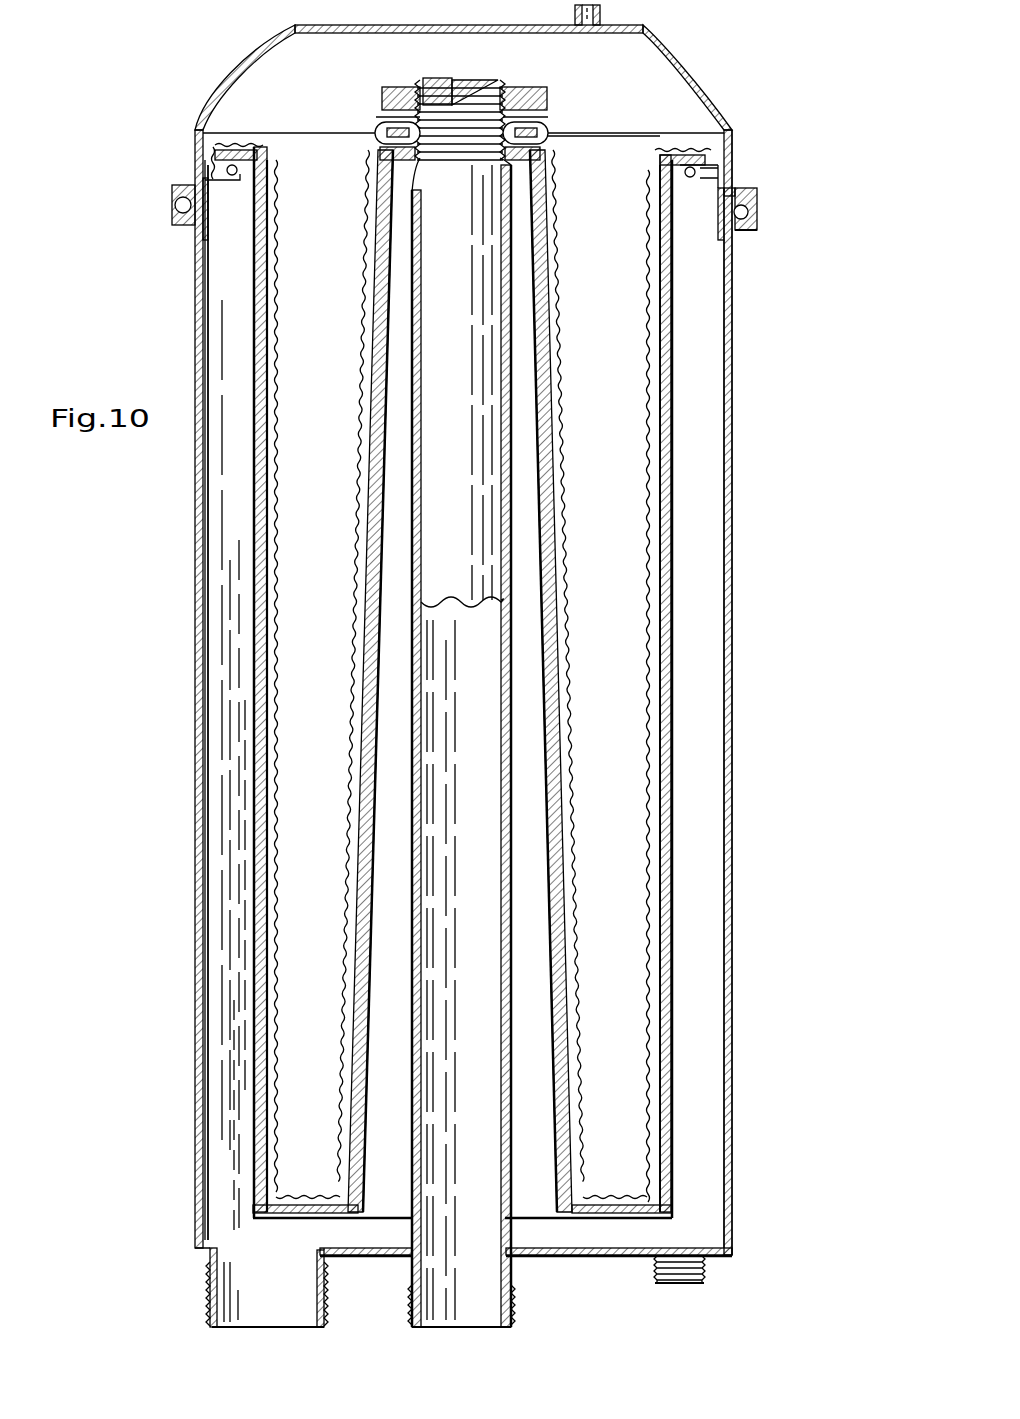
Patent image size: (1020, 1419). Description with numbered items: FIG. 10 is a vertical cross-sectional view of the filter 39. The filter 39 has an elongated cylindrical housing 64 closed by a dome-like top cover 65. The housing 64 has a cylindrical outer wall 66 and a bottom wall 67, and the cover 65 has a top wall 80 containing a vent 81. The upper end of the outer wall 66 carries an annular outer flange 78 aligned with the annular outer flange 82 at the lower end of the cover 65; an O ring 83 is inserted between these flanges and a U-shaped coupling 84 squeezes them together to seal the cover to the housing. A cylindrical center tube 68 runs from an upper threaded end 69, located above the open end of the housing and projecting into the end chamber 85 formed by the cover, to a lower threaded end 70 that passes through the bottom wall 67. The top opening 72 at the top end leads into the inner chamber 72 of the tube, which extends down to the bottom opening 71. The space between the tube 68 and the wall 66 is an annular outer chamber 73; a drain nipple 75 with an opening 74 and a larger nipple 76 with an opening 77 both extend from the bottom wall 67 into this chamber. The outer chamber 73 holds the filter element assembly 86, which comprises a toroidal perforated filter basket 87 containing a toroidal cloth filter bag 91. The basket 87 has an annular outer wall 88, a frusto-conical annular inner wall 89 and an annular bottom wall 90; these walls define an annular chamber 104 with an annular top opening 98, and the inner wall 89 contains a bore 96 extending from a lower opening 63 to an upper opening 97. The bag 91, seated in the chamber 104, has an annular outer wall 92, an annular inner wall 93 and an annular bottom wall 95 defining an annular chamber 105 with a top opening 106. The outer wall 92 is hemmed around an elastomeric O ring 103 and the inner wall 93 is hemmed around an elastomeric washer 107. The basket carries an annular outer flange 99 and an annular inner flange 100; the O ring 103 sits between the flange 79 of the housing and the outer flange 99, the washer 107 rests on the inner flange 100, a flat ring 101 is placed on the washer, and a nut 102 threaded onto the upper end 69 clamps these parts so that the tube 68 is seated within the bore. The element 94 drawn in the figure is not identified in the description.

The filter 39 is at (748, 400).
The lower opening 63 is at (372, 1162).
The housing 64 is at (748, 588).
The top cover 65 is at (210, 95).
The outer wall 66 is at (728, 670).
The bottom wall 67 is at (607, 1258).
The center tube 68 is at (516, 565).
The upper threaded end 69 is at (485, 95).
The lower threaded end 70 is at (512, 1312).
The bottom opening 71 is at (470, 1336).
The inner chamber 72 is at (440, 78).
The annular outer chamber 73 is at (712, 772).
The opening 74 is at (685, 1284).
The drain nipple 75 is at (705, 1268).
The nipple 76 is at (215, 1274).
The opening 77 is at (226, 1328).
The annular outer flange 78 is at (745, 232).
The flange 79 is at (716, 195).
The top wall 80 is at (332, 27).
The vent 81 is at (600, 20).
The annular outer flange 82 is at (735, 192).
The O ring 83 is at (748, 218).
The U-shaped coupling 84 is at (760, 210).
The end chamber 85 is at (292, 62).
The filter element assembly 86 is at (225, 650).
The perforated filter basket 87 is at (247, 590).
The annular outer wall 88 is at (256, 470).
The frusto conical annular inner wall 89 is at (380, 415).
The annular bottom wall 90 is at (262, 1222).
The cloth filter bag 91 is at (275, 805).
The annular outer wall 92 is at (265, 892).
The annular inner wall 93 is at (338, 935).
The annular passage 94 is at (242, 990).
The annular bottom wall 95 is at (300, 1213).
The bore 96 is at (382, 1232).
The upper opening 97 is at (500, 172).
The annular top opening 98 is at (655, 162).
The annular outer flange 99 is at (595, 114).
The annular inner flange 100 is at (515, 168).
The flat ring 101 is at (548, 128).
The nut 102 is at (522, 102).
The elastomeric O ring 103 is at (688, 175).
The annular chamber 104 is at (256, 343).
The annular chamber 105 is at (296, 268).
The top opening 106 is at (305, 158).
The elastomeric washer 107 is at (552, 138).